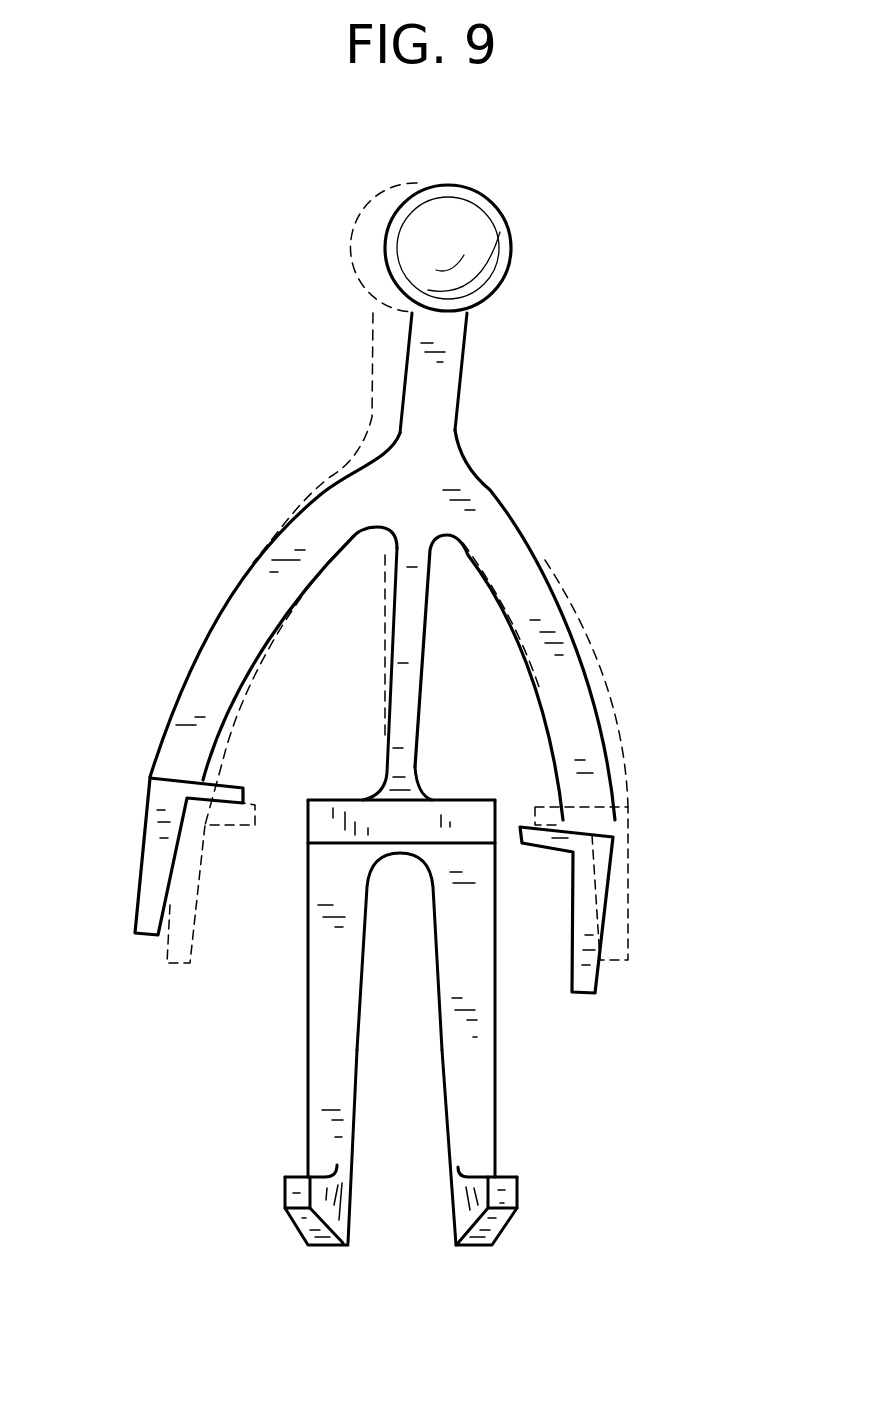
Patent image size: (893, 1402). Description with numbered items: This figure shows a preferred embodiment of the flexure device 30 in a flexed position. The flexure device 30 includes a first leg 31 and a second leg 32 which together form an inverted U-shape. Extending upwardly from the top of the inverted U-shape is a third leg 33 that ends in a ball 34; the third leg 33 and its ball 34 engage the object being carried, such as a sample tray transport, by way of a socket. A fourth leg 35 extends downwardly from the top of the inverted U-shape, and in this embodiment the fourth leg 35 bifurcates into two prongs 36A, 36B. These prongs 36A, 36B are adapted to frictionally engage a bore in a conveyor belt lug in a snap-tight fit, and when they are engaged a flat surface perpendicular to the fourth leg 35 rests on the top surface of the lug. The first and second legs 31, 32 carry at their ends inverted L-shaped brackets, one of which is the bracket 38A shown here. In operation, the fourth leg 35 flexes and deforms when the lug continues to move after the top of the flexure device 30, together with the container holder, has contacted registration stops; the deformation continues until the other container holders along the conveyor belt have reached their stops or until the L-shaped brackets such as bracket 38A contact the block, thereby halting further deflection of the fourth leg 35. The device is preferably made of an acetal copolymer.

The flexure device 30 is at (118, 681).
The first leg 31 is at (213, 617).
The second leg 32 is at (520, 517).
The third leg 33 is at (466, 356).
The ball 34 is at (484, 200).
The fourth leg 35 is at (421, 672).
The prong 36A is at (308, 1085).
The prong 36B is at (496, 1093).
The inverted L-shaped bracket 38A is at (138, 895).